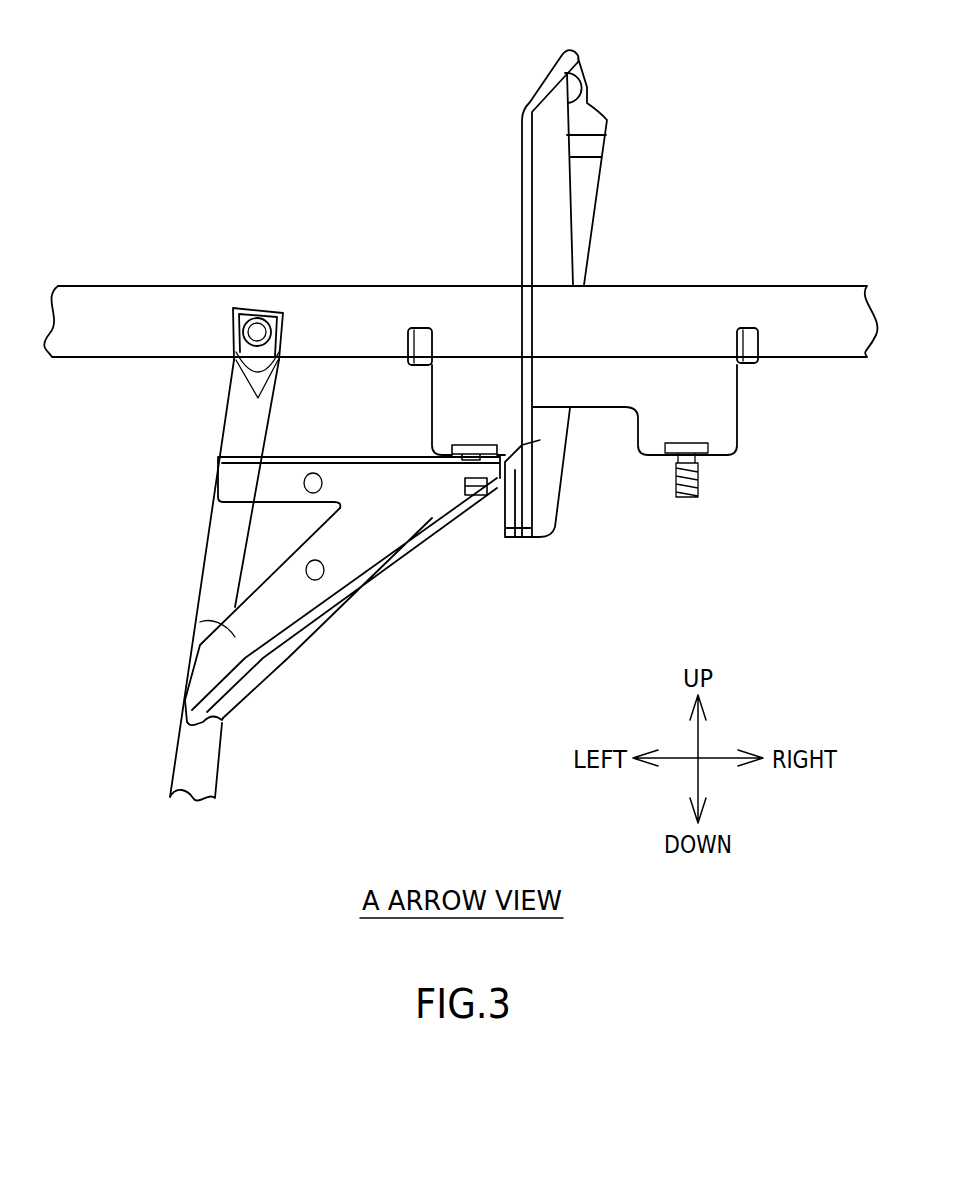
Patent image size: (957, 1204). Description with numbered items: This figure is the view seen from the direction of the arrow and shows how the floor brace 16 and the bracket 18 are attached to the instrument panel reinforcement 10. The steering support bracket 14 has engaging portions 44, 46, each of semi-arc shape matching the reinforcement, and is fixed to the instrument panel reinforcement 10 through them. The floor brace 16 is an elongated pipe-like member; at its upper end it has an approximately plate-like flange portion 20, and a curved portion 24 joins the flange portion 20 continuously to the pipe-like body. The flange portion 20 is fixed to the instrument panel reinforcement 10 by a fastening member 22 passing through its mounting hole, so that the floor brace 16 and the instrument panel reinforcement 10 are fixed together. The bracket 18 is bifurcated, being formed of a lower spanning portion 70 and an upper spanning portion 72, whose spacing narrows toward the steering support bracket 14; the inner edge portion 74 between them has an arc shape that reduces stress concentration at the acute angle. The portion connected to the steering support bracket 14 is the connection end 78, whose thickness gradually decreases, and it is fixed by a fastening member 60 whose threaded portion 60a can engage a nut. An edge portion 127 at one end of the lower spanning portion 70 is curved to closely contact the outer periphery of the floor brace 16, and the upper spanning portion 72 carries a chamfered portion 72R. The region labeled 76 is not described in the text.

The instrument panel reinforcement 10 is at (484, 298).
The steering support bracket 14 is at (782, 422).
The floor brace 16 is at (190, 782).
The bracket 18 is at (406, 702).
The flange portion 20 is at (253, 304).
The fastening member 22 is at (262, 328).
The curved portion 24 is at (255, 398).
The engaging portion 44 is at (418, 326).
The engaging portion 46 is at (750, 338).
The fastening member 60 is at (470, 445).
The threaded portion 60a is at (475, 497).
The lower spanning portion 70 is at (200, 622).
The upper spanning portion 72 is at (286, 480).
The chamfered portion 72R is at (342, 470).
The inner edge portion 74 is at (342, 505).
The flange 76 is at (432, 490).
The connection end 78 is at (510, 463).
The edge portion 127 is at (198, 722).